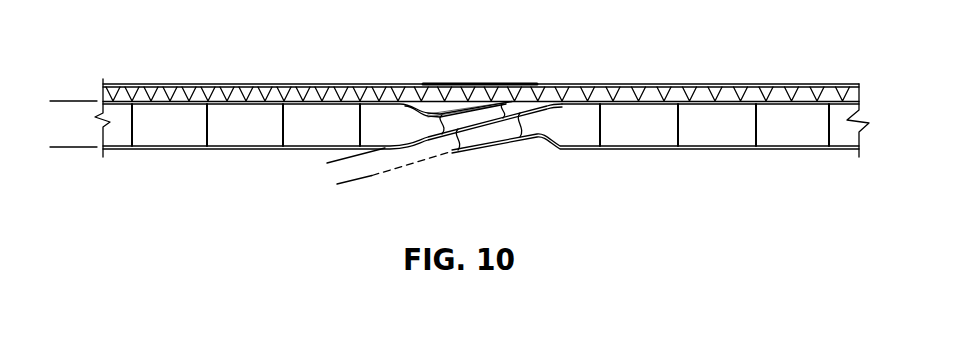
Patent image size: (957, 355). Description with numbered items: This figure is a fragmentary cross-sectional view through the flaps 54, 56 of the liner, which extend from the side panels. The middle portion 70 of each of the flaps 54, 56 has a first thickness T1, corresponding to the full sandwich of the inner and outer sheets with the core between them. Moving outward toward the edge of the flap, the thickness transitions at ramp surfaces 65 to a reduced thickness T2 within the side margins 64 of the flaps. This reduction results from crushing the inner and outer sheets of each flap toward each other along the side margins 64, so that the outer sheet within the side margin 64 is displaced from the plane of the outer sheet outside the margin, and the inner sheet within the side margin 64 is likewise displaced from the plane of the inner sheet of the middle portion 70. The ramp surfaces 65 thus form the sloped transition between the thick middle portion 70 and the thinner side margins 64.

The flap 54 is at (722, 148).
The flap 56 is at (238, 150).
The side margin 64 is at (498, 153).
The ramp surface 65 is at (522, 110).
The middle portion 70 is at (152, 151).
The first thickness T1 is at (64, 72).
The reduced thickness T2 is at (328, 130).